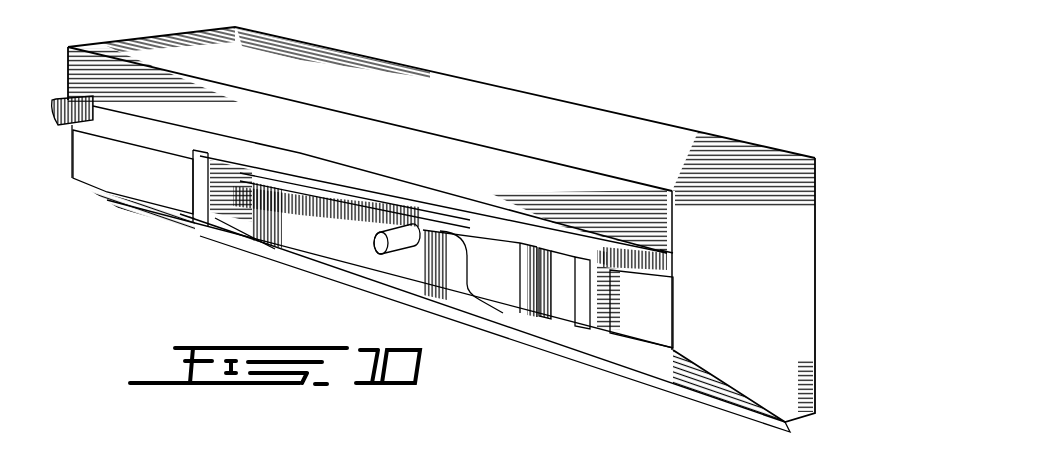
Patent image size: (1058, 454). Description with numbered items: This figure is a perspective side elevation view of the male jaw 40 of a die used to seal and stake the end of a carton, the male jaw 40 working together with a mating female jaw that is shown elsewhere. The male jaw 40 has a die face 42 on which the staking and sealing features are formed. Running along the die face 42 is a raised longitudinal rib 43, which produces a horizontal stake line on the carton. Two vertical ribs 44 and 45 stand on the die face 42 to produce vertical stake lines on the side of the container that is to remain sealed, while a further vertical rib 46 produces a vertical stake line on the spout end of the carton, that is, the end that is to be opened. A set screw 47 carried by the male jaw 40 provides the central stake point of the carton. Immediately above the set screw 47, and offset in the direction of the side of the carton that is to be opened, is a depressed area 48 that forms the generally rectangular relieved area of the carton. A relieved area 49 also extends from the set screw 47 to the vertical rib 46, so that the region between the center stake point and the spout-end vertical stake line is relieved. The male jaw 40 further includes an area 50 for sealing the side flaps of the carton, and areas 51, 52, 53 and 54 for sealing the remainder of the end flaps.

The male jaw 40 is at (725, 198).
The die face 42 is at (462, 95).
The raised longitudinal rib 43 is at (445, 210).
The vertical rib 44 is at (585, 320).
The vertical rib 45 is at (525, 303).
The vertical rib 46 is at (200, 206).
The set screw 47 is at (372, 250).
The depressed area 48 is at (352, 200).
The relieved area 49 is at (337, 245).
The sealing area 50 is at (346, 135).
The sealing area 51 is at (660, 327).
The sealing area 52 is at (567, 308).
The sealing area 53 is at (483, 268).
The sealing area 54 is at (133, 178).